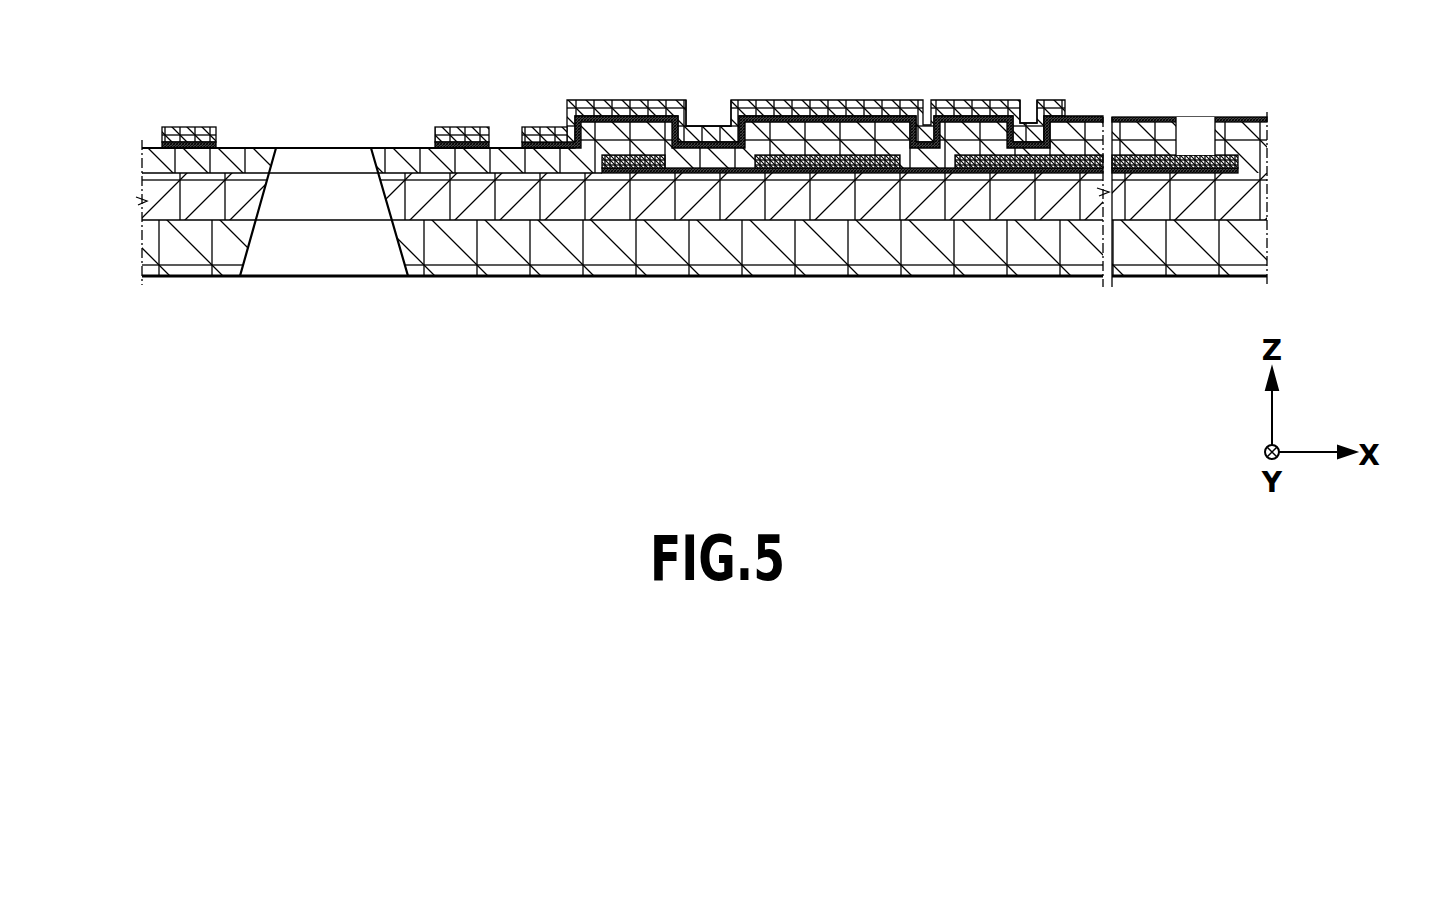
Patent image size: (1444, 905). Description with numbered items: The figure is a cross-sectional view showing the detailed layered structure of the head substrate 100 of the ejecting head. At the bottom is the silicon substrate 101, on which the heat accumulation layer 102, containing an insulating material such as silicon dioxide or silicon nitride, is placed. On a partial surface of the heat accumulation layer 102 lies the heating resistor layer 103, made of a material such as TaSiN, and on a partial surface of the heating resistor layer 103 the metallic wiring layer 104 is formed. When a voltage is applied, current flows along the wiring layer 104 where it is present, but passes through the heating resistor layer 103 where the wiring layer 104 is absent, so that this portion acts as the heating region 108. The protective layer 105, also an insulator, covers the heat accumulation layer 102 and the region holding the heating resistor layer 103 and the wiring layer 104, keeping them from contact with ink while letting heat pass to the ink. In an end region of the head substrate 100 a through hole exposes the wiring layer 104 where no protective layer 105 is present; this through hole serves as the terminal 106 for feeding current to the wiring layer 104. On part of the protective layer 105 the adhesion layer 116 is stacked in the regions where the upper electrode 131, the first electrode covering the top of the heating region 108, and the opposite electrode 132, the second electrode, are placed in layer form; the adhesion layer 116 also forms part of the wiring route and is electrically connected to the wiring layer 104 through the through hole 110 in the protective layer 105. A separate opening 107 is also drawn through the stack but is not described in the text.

The head substrate 100 is at (790, 230).
The silicon substrate 101 is at (1237, 248).
The heat accumulation layer 102 is at (1237, 211).
The heating resistor layer 103 is at (1246, 182).
The wiring layer 104 is at (628, 165).
The protective layer 105 is at (1240, 135).
The terminal 106 is at (1217, 118).
The through hole 107 is at (327, 234).
The heating region 108 is at (735, 93).
The through hole 110 is at (1050, 93).
The adhesion layer 116 is at (817, 117).
The upper electrode 131 is at (543, 133).
The opposite electrode 132 is at (190, 133).